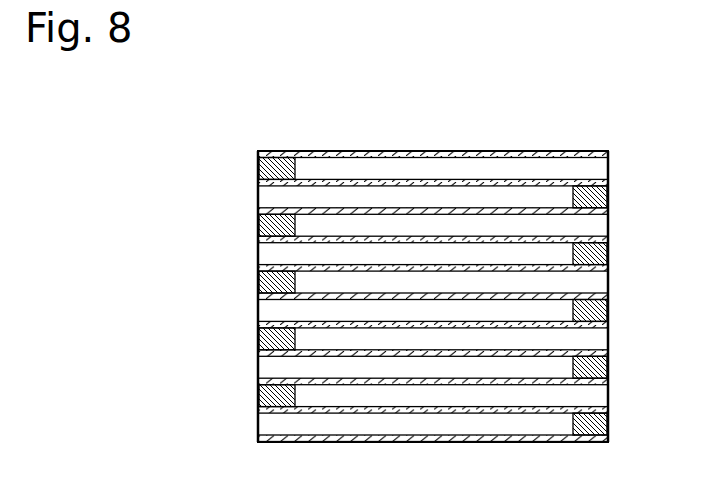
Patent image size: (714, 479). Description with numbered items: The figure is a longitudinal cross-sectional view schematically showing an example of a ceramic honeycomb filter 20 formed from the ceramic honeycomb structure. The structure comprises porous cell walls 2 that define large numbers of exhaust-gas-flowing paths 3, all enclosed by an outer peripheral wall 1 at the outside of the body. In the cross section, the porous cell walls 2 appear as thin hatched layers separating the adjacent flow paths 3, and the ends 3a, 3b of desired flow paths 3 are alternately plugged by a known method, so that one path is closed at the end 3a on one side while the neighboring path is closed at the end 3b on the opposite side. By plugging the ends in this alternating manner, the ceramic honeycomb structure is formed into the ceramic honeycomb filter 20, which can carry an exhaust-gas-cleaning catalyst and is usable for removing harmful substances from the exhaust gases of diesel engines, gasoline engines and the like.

The ceramic honeycomb filter 20 is at (262, 122).
The outer peripheral wall 1 is at (328, 151).
The porous cell walls 2 is at (458, 183).
The exhaust-gas-flowing paths 3 is at (393, 197).
The end of flow path 3a is at (268, 226).
The end of flow path 3b is at (600, 249).